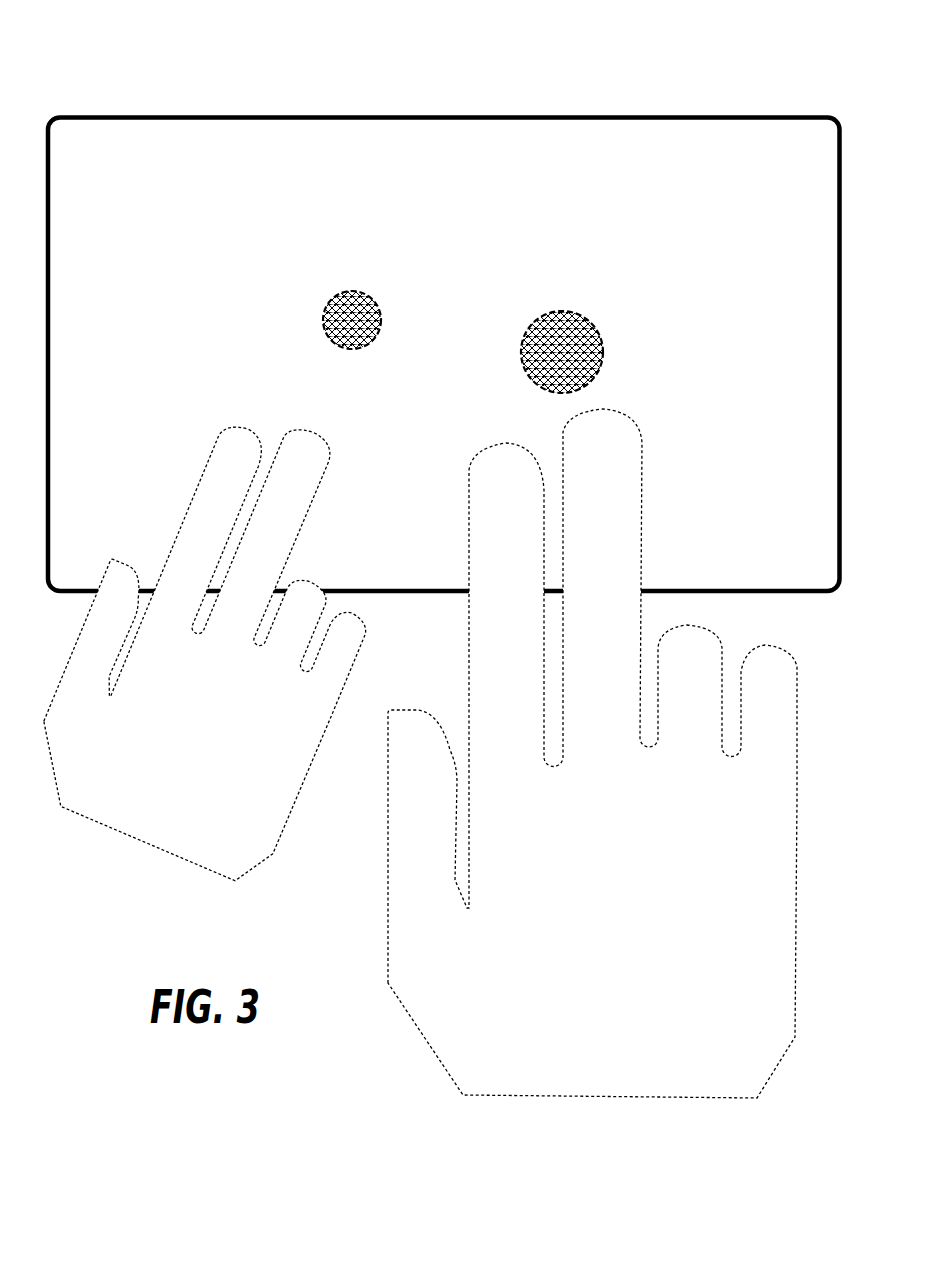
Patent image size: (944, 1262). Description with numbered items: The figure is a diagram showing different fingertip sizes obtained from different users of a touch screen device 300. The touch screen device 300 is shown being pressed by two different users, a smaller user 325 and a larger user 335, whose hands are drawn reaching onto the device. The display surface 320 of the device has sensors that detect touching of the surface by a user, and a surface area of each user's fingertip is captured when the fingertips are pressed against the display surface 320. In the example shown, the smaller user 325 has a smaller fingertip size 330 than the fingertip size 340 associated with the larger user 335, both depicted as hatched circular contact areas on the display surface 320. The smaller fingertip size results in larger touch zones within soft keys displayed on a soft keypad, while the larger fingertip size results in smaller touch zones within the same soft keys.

The touch screen device 300 is at (650, 100).
The display surface 320 is at (456, 155).
The user 325 is at (212, 703).
The fingertip size 330 is at (350, 292).
The user 335 is at (605, 899).
The fingertip size 340 is at (562, 310).